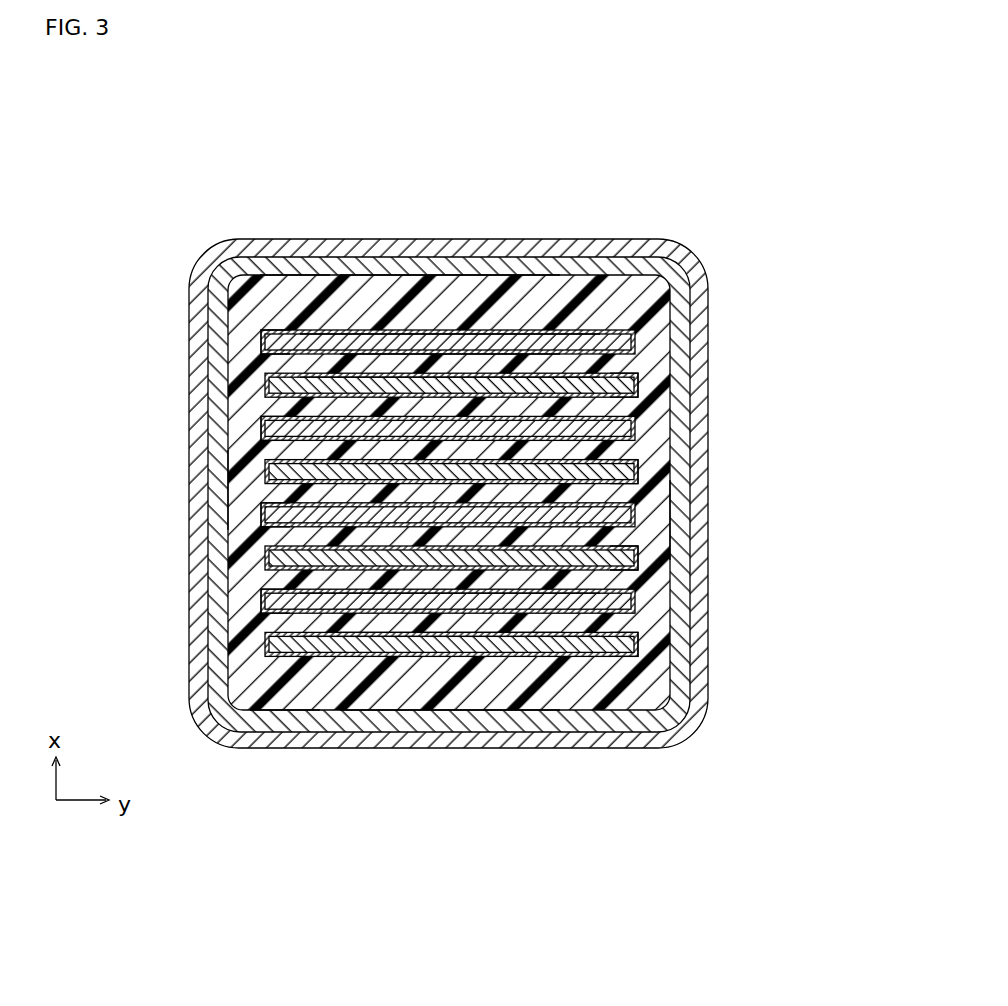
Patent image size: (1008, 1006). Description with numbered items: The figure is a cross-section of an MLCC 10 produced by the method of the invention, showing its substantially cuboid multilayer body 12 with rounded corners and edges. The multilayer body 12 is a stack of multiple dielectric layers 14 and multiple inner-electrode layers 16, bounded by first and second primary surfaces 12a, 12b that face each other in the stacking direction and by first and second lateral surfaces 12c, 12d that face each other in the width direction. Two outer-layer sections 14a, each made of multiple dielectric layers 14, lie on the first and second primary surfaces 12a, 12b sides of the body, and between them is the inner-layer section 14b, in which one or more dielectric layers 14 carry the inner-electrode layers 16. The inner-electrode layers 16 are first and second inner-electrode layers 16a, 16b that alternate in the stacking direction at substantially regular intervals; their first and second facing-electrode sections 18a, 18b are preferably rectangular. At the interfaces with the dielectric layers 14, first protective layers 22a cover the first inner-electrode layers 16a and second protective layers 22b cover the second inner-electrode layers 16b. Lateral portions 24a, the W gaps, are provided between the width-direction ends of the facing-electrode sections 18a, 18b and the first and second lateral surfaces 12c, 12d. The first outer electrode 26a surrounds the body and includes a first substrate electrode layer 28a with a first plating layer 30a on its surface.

The MLCC 10 is at (115, 218).
The multilayer body 12 is at (588, 275).
The first primary surface 12a is at (288, 277).
The second primary surface 12b is at (281, 711).
The first lateral surface 12c is at (228, 489).
The second lateral surface 12d is at (670, 518).
The dielectric layer 14 is at (450, 494).
The outer-layer section 14a is at (407, 313).
The inner-layer section 14b is at (503, 448).
The inner-electrode layer 16 is at (454, 659).
The first inner-electrode layer 16a is at (267, 348).
The second inner-electrode layer 16b is at (630, 392).
The first facing-electrode section 18a is at (360, 430).
The second facing-electrode section 18b is at (537, 472).
The first protective layer 22a is at (267, 338).
The second protective layer 22b is at (637, 380).
The lateral portion 24a is at (533, 441).
The first outer electrode 26a is at (533, 493).
The first substrate electrode layer 28a is at (680, 323).
The first plating layer 30a is at (697, 355).